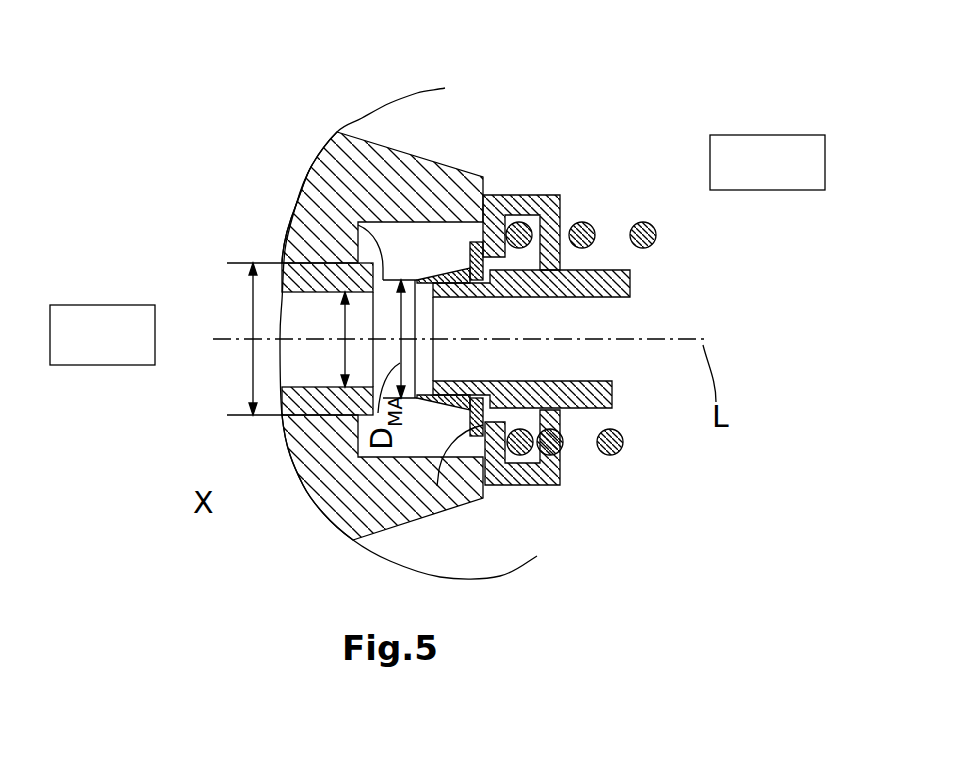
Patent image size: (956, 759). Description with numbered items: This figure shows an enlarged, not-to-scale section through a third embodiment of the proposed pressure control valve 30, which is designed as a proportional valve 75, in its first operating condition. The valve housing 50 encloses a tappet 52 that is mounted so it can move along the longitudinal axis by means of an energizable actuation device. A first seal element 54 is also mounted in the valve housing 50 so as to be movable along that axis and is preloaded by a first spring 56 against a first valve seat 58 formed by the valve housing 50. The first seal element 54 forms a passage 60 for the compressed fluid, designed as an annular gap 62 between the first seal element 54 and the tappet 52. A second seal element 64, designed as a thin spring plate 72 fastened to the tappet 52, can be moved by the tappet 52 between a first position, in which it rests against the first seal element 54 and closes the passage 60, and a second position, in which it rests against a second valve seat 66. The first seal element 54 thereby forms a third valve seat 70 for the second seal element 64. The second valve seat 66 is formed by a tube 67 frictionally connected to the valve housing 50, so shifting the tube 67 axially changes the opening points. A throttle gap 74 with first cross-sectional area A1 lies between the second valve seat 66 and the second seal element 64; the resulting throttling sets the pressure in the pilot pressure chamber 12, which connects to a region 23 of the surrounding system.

The pilot pressure chamber 12 is at (96, 304).
The second unit 23 is at (778, 133).
The pressure control valve 30 is at (349, 304).
The proportional valve 75 is at (250, 119).
The valve housing 50 is at (440, 180).
The tappet 52 is at (572, 395).
The first seal element 54 is at (533, 195).
The first spring 56 is at (643, 222).
The first valve seat 58 is at (520, 487).
The passage 60 is at (597, 339).
The annular gap 62 is at (620, 296).
The second seal element 64 is at (486, 414).
The spring plate 72 is at (445, 512).
The second valve seat 66 is at (357, 232).
The tube 67 is at (292, 415).
The third valve seat 70 is at (483, 223).
The throttle gap 74 is at (247, 202).
The first cross-sectional area A1 is at (302, 175).